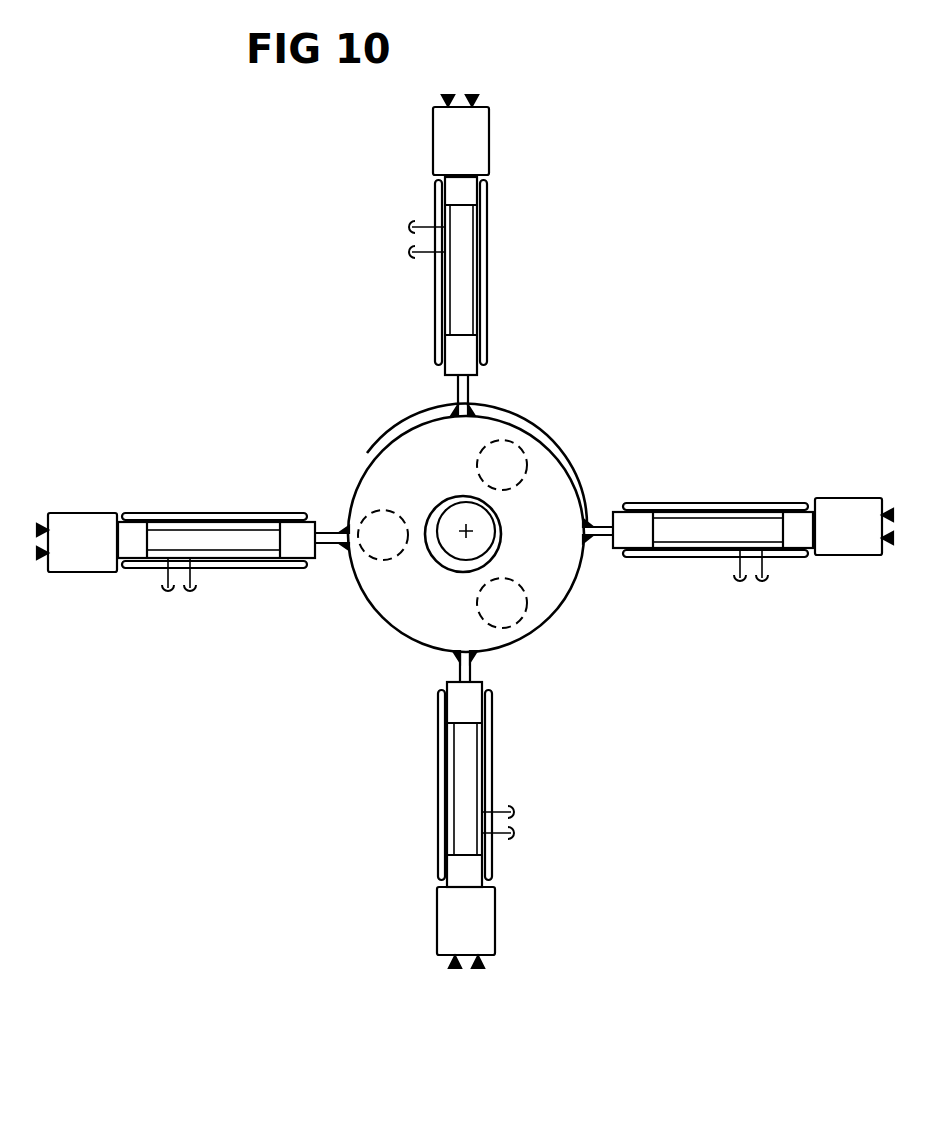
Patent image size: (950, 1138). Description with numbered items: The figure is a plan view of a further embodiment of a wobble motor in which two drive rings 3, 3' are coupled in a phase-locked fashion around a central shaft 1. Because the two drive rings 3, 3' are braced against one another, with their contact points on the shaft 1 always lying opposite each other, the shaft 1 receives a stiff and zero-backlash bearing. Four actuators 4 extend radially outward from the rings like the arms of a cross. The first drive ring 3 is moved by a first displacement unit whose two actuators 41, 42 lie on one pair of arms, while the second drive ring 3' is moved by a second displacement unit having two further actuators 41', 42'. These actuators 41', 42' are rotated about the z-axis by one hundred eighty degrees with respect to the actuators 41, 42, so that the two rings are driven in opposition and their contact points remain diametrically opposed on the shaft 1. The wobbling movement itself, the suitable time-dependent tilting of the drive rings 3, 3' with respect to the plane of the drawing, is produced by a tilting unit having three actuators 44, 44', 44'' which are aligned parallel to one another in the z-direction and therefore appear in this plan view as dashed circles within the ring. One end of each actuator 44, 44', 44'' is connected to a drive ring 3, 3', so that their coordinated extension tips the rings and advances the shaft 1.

The shaft 1 is at (481, 520).
The drive ring 3 is at (484, 534).
The second drive ring 3' is at (498, 466).
The actuators 4 is at (465, 531).
The actuator 41 is at (405, 809).
The actuator 41' is at (526, 255).
The actuator 42 is at (193, 497).
The actuator 42' is at (738, 485).
The actuator 44 is at (527, 618).
The actuator 44' is at (362, 510).
The actuator 44'' is at (528, 432).